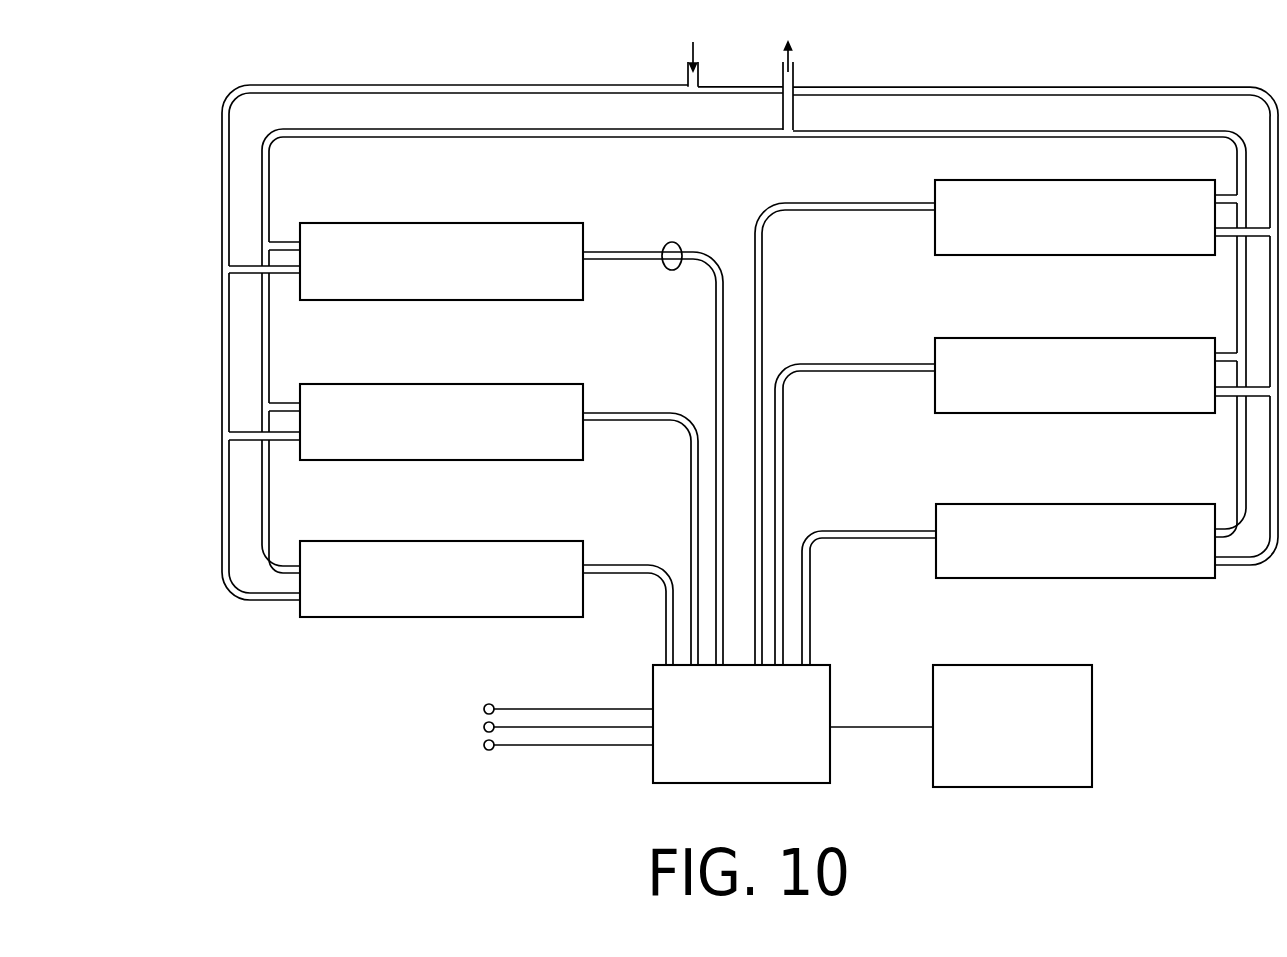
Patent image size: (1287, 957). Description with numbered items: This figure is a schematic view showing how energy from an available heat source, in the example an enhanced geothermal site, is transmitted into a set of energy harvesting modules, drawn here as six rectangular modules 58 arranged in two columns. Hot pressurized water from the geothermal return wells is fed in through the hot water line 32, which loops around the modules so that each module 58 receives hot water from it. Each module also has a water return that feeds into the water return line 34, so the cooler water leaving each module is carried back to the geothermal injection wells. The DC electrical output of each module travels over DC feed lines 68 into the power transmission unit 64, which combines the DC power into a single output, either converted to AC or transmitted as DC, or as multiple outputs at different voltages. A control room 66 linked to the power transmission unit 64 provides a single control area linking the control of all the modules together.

The hot water line 32 is at (265, 87).
The water return line 34 is at (288, 129).
The heat exchanger / thermal module 58 is at (358, 273).
The power transmission unit 64 is at (768, 742).
The control room 66 is at (1017, 746).
The DC feed lines 68 is at (666, 246).